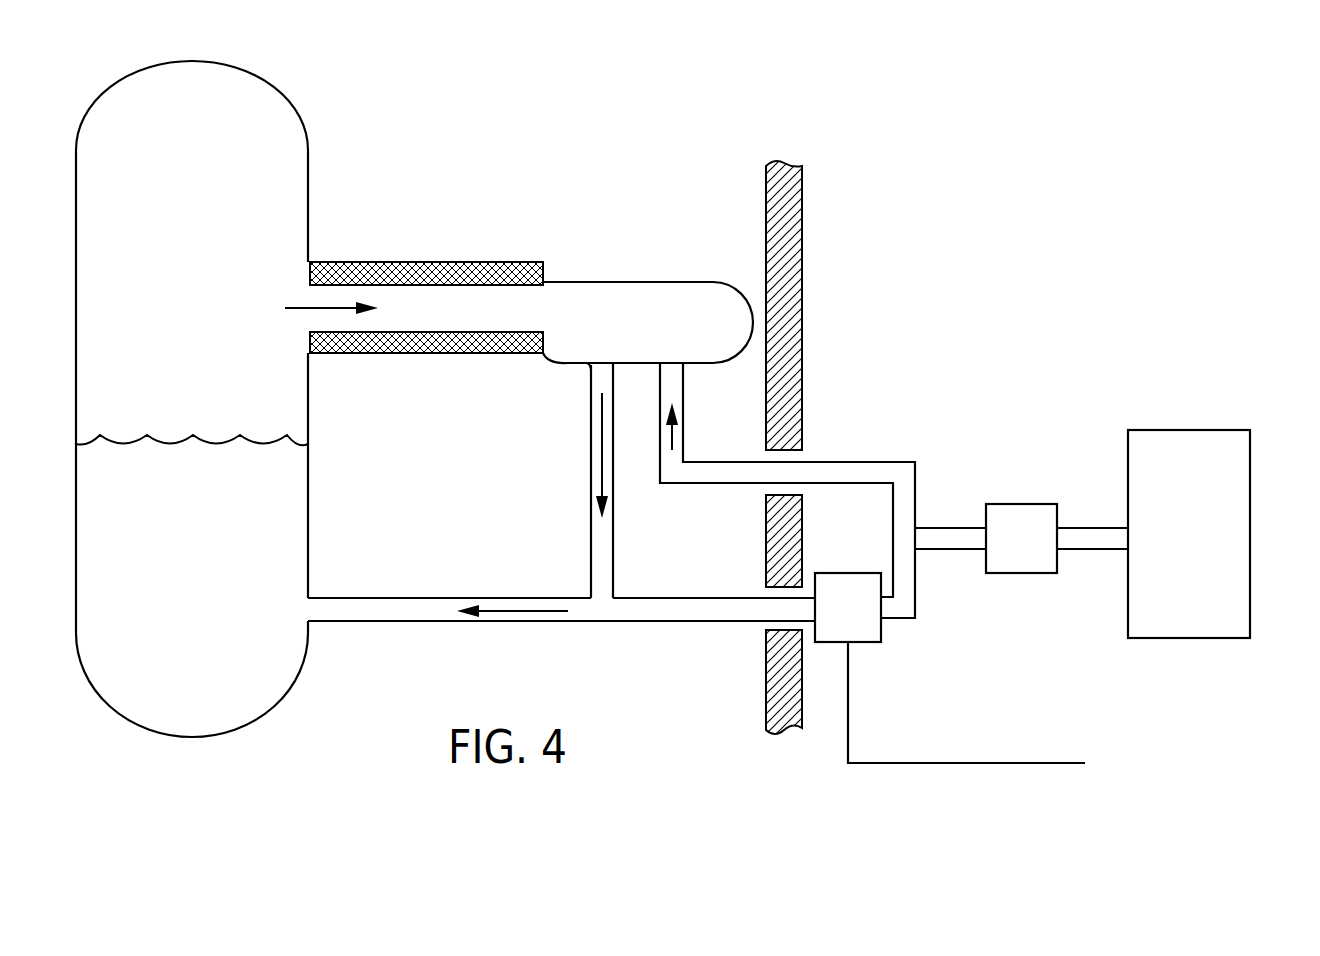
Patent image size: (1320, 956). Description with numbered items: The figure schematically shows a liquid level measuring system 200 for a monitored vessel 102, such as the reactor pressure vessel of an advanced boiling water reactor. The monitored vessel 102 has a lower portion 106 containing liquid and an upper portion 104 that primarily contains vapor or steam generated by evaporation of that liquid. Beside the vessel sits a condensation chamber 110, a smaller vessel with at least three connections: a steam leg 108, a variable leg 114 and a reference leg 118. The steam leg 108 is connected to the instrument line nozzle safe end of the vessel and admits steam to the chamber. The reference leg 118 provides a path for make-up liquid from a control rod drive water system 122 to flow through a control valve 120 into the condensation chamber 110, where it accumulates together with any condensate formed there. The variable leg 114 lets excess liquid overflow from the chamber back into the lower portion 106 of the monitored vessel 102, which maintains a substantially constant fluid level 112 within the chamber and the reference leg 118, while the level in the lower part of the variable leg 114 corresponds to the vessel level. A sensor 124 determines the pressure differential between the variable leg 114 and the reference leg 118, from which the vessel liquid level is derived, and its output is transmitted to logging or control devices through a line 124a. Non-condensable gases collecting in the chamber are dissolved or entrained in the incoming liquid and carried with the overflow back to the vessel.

The monitored vessel 102 is at (303, 137).
The upper portion 104 is at (262, 266).
The lower portion 106 is at (233, 570).
The steam leg 108 is at (418, 313).
The condensation chamber 110 is at (588, 300).
The fluid level 112 is at (587, 372).
The variable leg 114 is at (587, 528).
The reference leg 118 is at (840, 470).
The control valve 120 is at (1013, 504).
The control rod drive water system 122 is at (1170, 430).
The sensor 124 is at (882, 635).
The line 124a is at (963, 763).
The liquid level measuring system 200 is at (1130, 220).